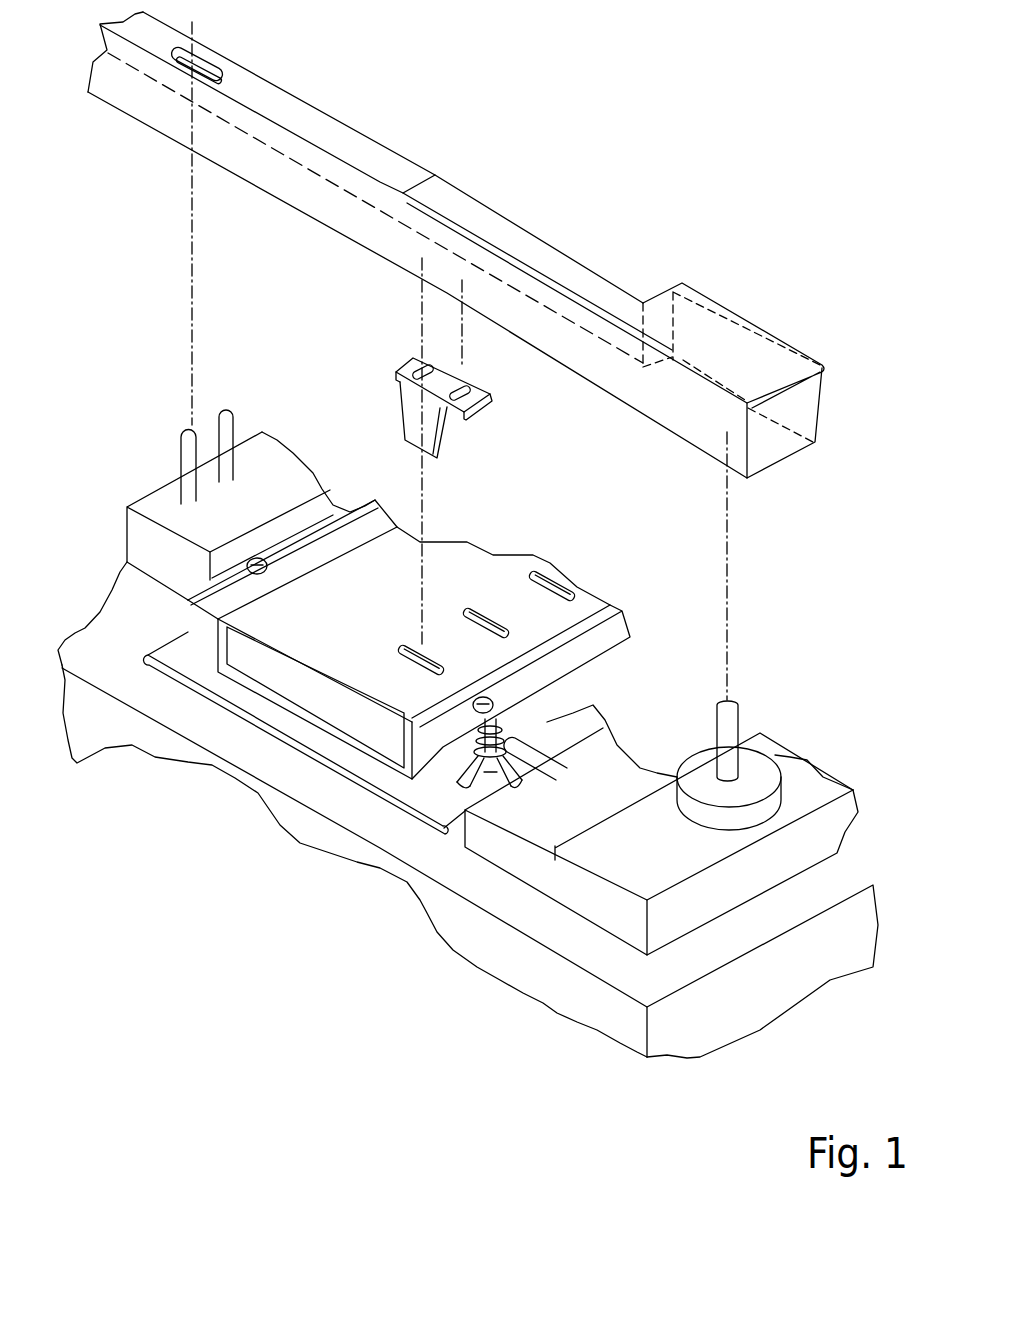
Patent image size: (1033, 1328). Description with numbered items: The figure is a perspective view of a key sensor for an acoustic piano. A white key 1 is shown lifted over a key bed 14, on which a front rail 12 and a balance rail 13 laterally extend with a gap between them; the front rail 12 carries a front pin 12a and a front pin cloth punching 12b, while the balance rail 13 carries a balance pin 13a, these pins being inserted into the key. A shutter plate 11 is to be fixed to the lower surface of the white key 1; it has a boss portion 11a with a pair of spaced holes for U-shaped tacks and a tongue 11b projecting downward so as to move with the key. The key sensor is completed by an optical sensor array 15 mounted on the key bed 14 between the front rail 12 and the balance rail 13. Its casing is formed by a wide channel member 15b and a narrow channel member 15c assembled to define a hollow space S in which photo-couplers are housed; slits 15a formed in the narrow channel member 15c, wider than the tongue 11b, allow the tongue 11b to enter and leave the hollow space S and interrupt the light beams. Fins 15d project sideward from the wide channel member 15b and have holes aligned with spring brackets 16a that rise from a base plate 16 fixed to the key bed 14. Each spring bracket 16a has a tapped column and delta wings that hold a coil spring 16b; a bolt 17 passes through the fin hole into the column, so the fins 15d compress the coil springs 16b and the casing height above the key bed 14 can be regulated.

The white key 1 is at (618, 302).
The shutter plate 11 is at (496, 417).
The boss portion 11a is at (478, 398).
The tongue 11b is at (447, 440).
The front rail 12 is at (728, 885).
The front pin 12a is at (740, 722).
The front pin cloth punching 12b is at (760, 772).
The balance rail 13 is at (143, 543).
The balance pin 13a is at (180, 448).
The key bed 14 is at (183, 722).
The optical sensor array 15 is at (310, 749).
The slits 15a is at (399, 648).
The wide channel member 15b is at (274, 703).
The narrow channel member 15c is at (295, 653).
The fins 15d is at (398, 527).
The base plate 16 is at (367, 773).
The spring bracket 16a is at (506, 728).
The coil spring 16b is at (484, 780).
The bolt 17 is at (266, 562).
The hollow space S is at (360, 702).